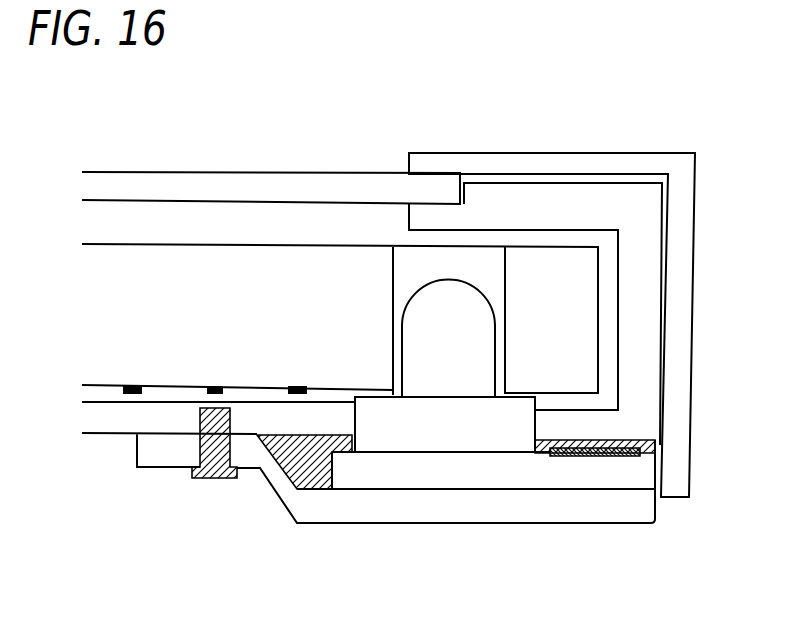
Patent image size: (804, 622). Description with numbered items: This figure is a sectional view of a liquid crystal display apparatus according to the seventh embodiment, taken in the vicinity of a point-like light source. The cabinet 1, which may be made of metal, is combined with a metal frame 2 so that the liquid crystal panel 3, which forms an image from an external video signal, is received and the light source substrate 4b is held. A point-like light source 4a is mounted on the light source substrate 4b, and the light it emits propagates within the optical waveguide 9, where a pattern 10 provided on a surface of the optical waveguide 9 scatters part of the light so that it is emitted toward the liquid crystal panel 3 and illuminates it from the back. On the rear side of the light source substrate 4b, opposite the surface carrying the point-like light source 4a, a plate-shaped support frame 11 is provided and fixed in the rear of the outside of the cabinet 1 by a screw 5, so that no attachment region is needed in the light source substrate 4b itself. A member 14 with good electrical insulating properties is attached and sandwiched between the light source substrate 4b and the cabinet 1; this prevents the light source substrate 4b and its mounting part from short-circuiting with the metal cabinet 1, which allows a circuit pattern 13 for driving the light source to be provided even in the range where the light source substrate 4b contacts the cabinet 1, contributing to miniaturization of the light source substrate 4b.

The cabinet 1 is at (648, 391).
The frame 2 is at (681, 217).
The liquid crystal panel 3 is at (318, 188).
The point-like light source 4a is at (463, 322).
The light source substrate 4b is at (457, 480).
The screw 5 is at (230, 450).
The optical waveguide 9 is at (165, 310).
The pattern 10 is at (132, 393).
The support frame 11 is at (385, 510).
The circuit pattern 13 is at (590, 480).
The insulating member 14 is at (308, 490).